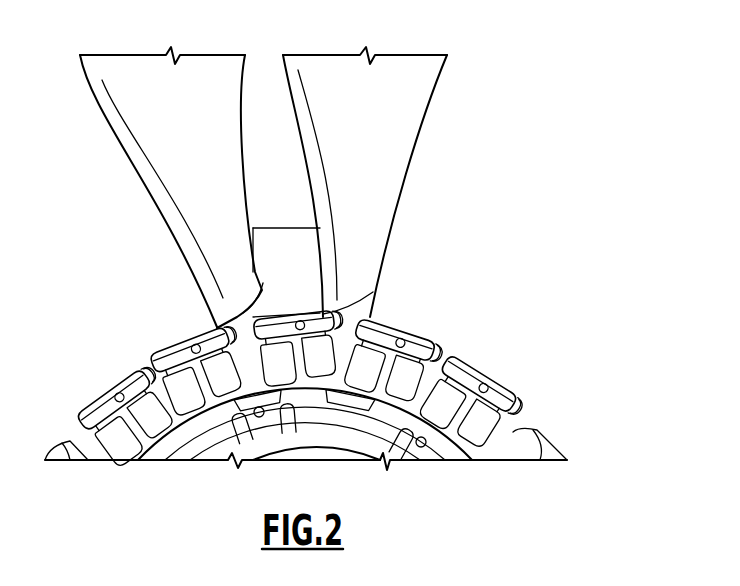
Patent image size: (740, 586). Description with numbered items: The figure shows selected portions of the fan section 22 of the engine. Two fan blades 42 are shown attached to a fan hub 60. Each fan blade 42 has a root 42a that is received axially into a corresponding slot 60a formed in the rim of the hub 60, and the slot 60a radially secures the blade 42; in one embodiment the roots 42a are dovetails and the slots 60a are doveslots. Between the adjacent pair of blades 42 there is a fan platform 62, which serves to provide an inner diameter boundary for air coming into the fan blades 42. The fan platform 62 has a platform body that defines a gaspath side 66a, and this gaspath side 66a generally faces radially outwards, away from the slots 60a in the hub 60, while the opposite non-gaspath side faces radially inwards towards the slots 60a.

The fan section 22 is at (551, 104).
The fan blade 42 is at (118, 147).
The root 42a is at (183, 330).
The fan hub 60 is at (466, 447).
The slot 60a is at (150, 369).
The fan platform 62 is at (340, 247).
The gaspath side 66a is at (286, 210).